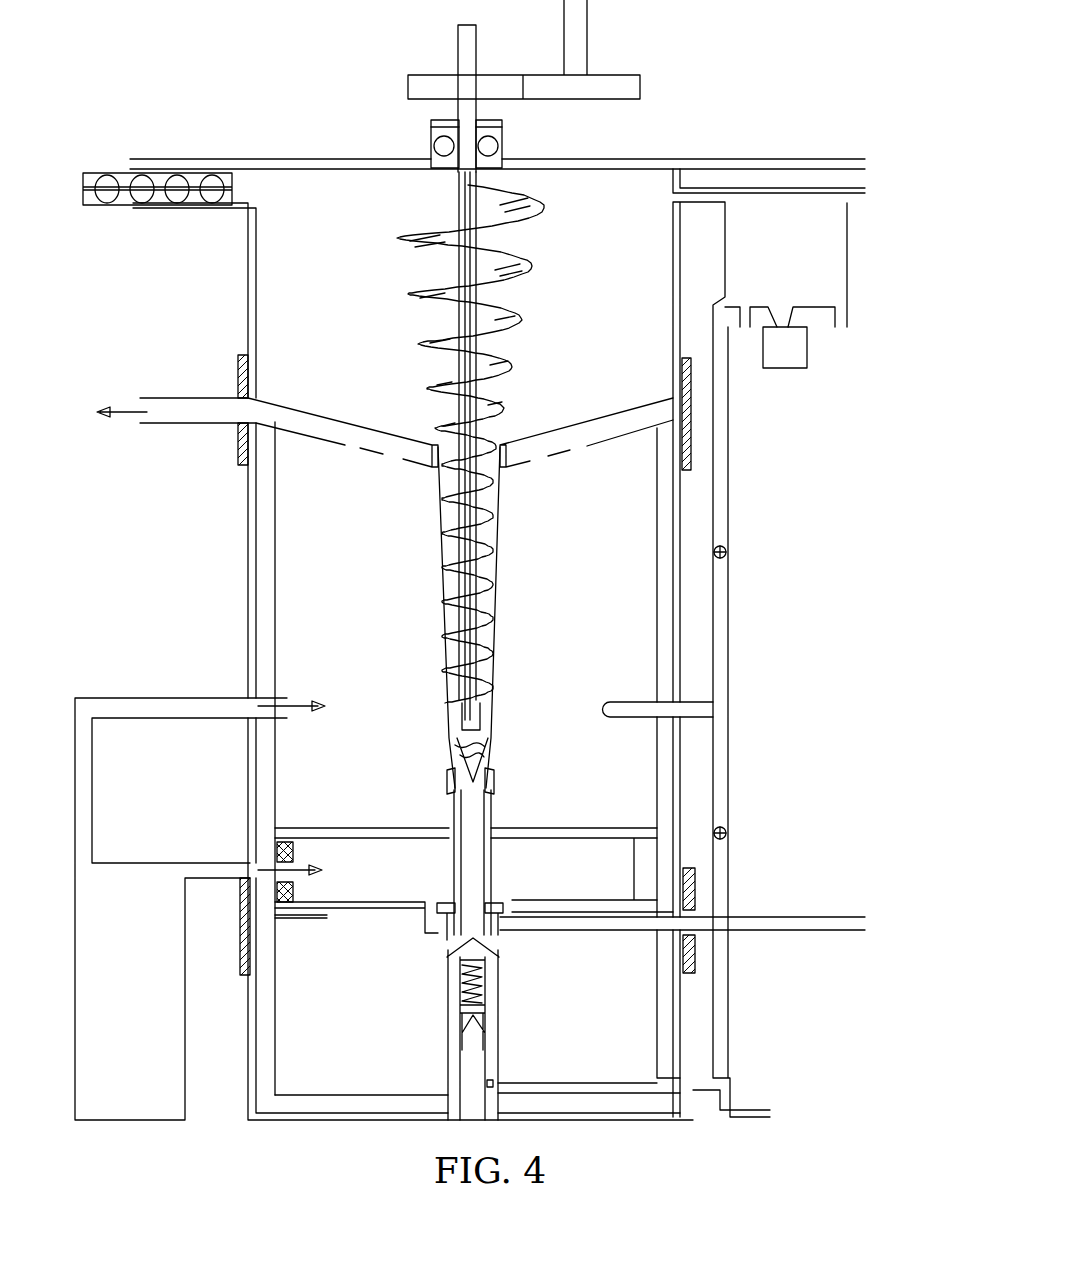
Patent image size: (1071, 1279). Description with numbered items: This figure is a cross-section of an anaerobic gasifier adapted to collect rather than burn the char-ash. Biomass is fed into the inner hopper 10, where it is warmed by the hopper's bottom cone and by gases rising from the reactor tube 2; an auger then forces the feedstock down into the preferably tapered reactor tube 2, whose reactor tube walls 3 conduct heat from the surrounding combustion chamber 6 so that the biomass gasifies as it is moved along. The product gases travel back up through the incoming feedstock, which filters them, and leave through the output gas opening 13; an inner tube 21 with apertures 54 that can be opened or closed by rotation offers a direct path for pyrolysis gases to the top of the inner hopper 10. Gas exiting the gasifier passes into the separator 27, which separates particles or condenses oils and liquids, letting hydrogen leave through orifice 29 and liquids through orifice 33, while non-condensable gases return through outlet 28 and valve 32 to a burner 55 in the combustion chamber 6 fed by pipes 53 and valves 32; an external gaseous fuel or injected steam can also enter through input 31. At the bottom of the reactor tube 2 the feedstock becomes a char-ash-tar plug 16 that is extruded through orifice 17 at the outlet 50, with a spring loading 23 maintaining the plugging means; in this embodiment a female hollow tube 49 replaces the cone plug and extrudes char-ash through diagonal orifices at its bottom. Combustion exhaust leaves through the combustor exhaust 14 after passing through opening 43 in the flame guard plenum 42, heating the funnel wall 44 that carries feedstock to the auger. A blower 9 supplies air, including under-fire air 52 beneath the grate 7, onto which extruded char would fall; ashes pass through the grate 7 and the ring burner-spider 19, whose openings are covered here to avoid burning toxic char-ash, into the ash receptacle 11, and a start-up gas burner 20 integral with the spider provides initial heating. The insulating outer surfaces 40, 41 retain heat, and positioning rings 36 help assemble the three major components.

The reactor tube 2 is at (486, 560).
The reactor tube walls 3 is at (494, 632).
The combustion chamber 6 is at (630, 753).
The grate 7 is at (577, 830).
The blower 9 is at (200, 909).
The inner hopper 10 is at (346, 278).
The ash receptacle 11 is at (589, 1045).
The output gas opening 13 is at (698, 203).
The combustor exhaust 14 is at (103, 413).
The char-ash-tar plug 16 is at (486, 740).
The orifice 17 is at (484, 770).
The ring burner-spider 19 is at (345, 910).
The start-up gas burner 20 is at (437, 935).
The inner tube 21 is at (503, 242).
The spring loading 23 is at (483, 970).
The separator 27 is at (808, 265).
The outlet 28 is at (722, 292).
The orifice 29 is at (742, 330).
The input 31 is at (775, 915).
The valves 32 is at (726, 550).
The orifice 33 is at (840, 330).
The positioning rings 36 is at (238, 370).
The outer surface 40 is at (265, 622).
The outer surface 41 is at (250, 573).
The flame guard plenum 42 is at (300, 437).
The opening 43 is at (345, 448).
The funnel wall 44 is at (282, 400).
The female hollow tube 49 is at (447, 780).
The outlet 50 is at (492, 785).
The under-fire air 52 is at (310, 872).
The pipes 53 is at (730, 640).
The apertures 54 is at (440, 590).
The burner 55 is at (625, 700).